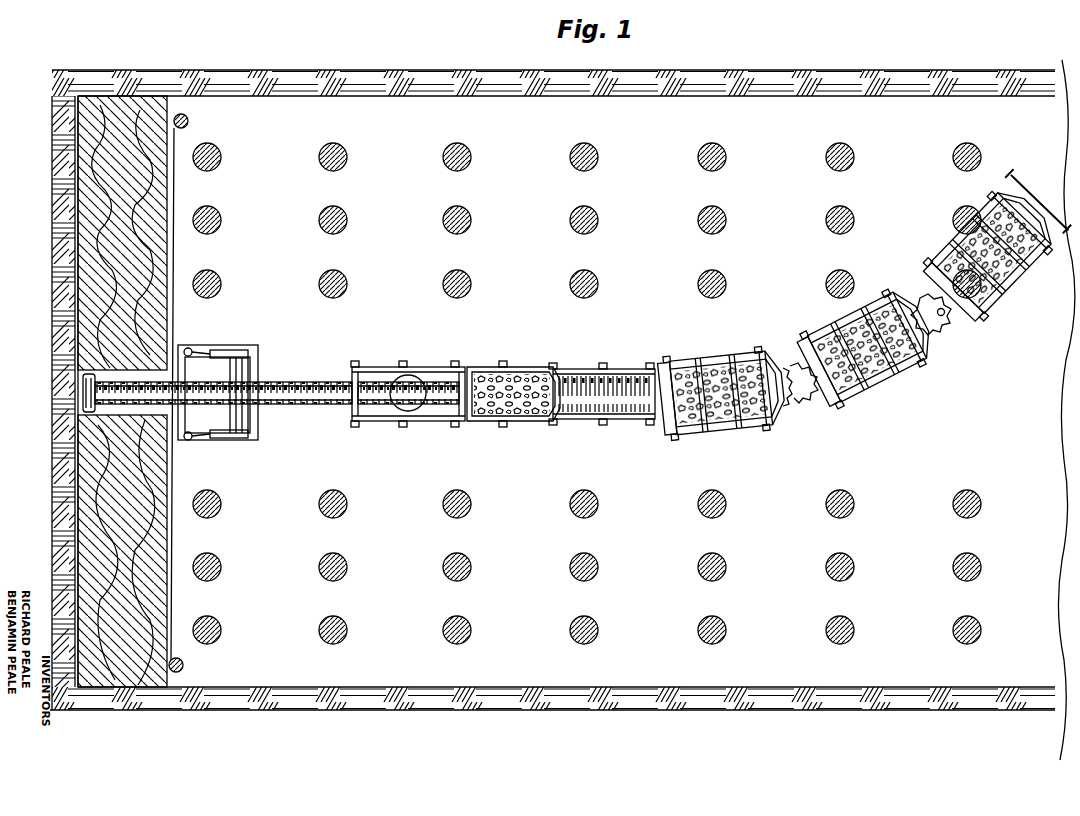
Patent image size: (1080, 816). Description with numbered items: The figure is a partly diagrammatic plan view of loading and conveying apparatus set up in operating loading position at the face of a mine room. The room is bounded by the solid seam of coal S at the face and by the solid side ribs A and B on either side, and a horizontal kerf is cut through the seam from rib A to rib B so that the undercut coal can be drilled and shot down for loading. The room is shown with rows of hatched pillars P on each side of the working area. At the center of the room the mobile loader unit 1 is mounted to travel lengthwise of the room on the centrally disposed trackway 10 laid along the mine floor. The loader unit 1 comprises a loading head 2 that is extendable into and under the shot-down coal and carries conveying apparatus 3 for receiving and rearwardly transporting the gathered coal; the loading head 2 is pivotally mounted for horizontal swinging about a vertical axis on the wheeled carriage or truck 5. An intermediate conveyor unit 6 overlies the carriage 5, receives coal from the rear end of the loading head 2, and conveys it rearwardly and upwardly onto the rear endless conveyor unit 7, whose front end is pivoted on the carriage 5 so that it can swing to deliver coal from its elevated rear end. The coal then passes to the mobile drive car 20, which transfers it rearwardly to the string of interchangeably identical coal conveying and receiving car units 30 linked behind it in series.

The solid side rib A is at (421, 96).
The solid side rib B is at (325, 688).
The solid seam of coal S is at (56, 433).
The pillars P is at (470, 292).
The mobile loader unit 1 is at (242, 438).
The loading head 2 is at (90, 372).
The conveying apparatus 3 is at (278, 406).
The wheeled carriage 5 is at (428, 418).
The intermediate conveyor unit 6 is at (520, 420).
The rear endless conveyor unit 7 is at (624, 420).
The trackway 10 is at (796, 356).
The mobile drive car 20 is at (702, 430).
The coal conveying and receiving car unit 30 is at (990, 322).